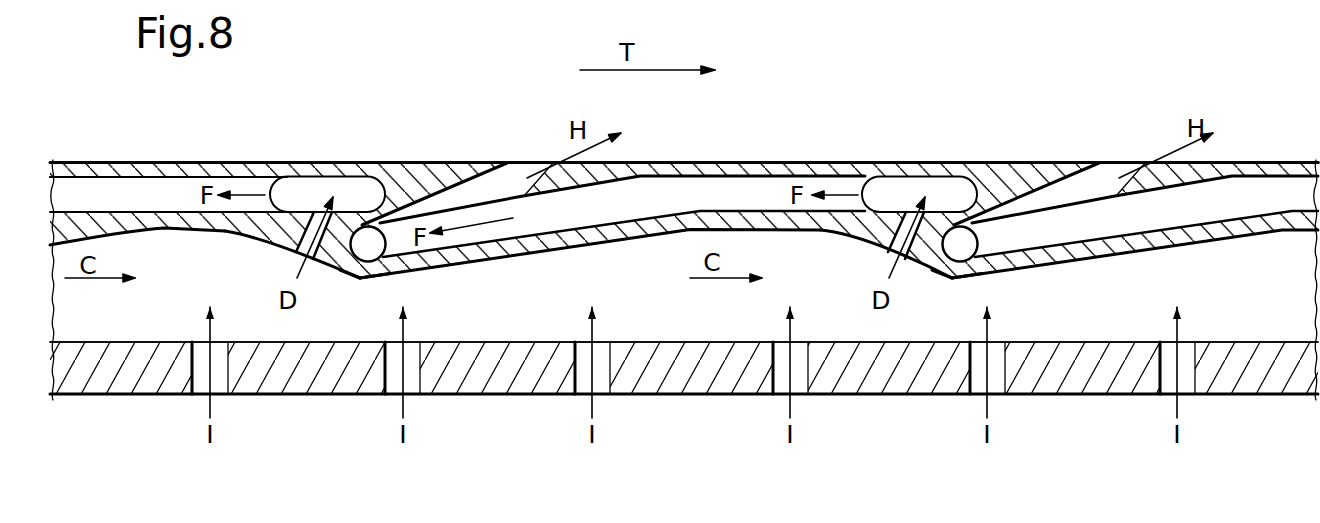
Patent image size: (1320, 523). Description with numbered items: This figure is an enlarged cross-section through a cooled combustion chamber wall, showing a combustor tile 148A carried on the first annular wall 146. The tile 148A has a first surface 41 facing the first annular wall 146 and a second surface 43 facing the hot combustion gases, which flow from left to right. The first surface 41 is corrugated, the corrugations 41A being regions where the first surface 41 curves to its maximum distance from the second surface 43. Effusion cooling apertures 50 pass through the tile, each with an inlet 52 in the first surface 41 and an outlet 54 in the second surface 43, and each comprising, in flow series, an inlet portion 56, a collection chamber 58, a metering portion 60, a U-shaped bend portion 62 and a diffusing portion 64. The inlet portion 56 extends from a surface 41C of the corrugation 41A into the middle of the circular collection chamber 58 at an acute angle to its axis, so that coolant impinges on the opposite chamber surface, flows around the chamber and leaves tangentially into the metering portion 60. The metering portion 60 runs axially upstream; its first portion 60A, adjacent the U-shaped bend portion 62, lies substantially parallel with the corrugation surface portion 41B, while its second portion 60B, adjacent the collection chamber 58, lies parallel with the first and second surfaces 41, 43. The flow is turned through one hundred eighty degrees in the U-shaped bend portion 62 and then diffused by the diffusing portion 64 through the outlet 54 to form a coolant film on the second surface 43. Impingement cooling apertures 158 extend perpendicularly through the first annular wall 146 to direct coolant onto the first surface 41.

The first surface 41 is at (1105, 268).
The corrugations 41A is at (360, 280).
The portion of the first surface forming the corrugation 41B is at (552, 252).
The surface of the corrugation 41C is at (267, 240).
The second surface 43 is at (1048, 162).
The effusion cooling apertures 50 is at (188, 185).
The inlet 52 is at (300, 246).
The outlet 54 is at (522, 162).
The inlet portion 56 is at (318, 262).
The collection chamber 58 is at (328, 185).
The metering portion 60 is at (80, 197).
The first portion of the metering portion 60A is at (567, 213).
The second portion of the metering portion 60B is at (132, 197).
The U-shaped bend portion 62 is at (368, 243).
The diffusing portion 64 is at (458, 197).
The first annular wall 146 is at (1070, 372).
The combustor tile 148A is at (1248, 162).
The impingement cooling apertures 158 is at (393, 383).